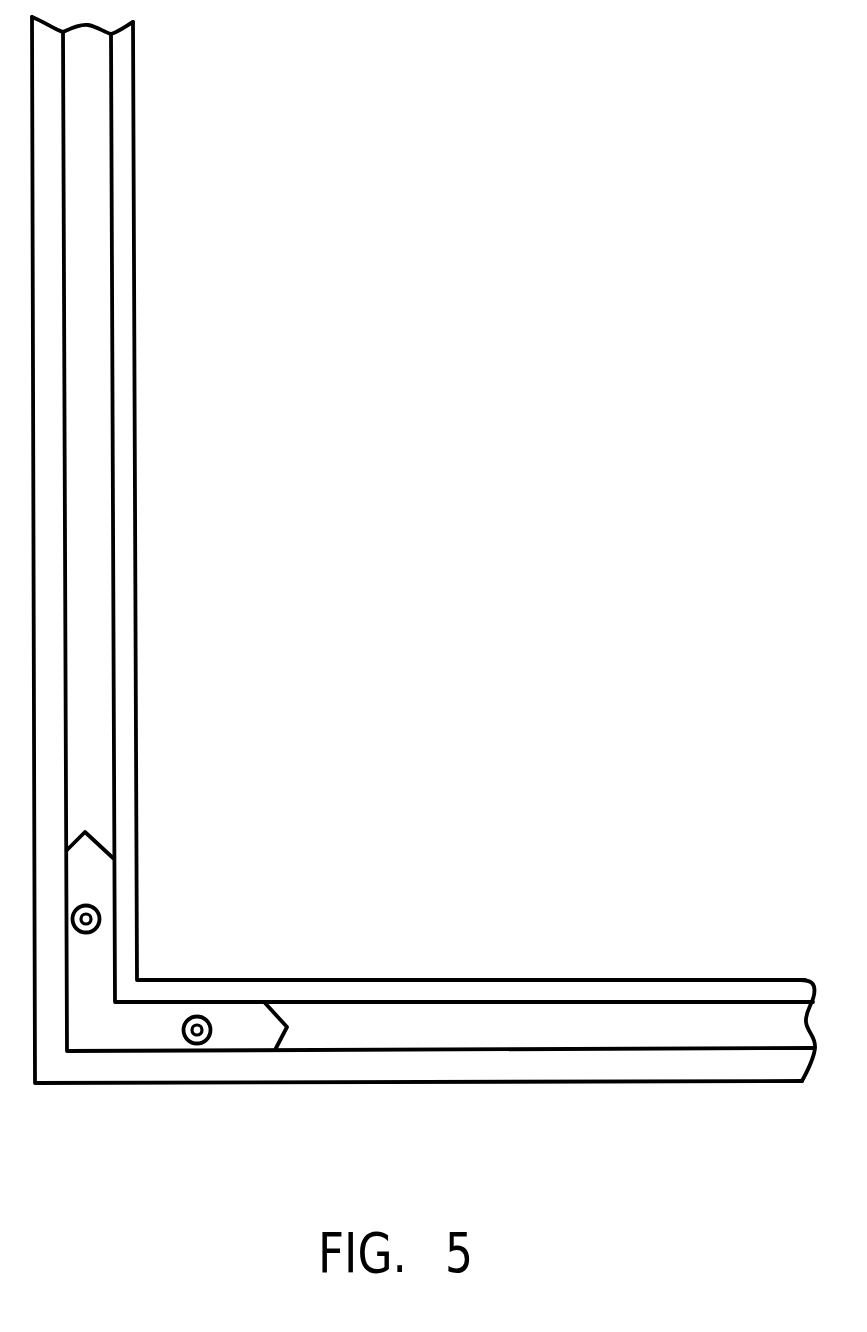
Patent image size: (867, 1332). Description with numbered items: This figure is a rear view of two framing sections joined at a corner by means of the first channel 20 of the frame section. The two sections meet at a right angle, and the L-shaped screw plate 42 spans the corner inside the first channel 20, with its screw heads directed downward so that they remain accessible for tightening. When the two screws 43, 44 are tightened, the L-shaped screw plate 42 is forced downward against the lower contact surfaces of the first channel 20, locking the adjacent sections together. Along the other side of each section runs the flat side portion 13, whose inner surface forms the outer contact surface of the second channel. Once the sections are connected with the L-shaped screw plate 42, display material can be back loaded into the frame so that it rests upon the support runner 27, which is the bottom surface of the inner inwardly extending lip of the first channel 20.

The flat side portion 13 is at (600, 1081).
The first channel 20 is at (650, 1027).
The support runner 27 is at (452, 992).
The L-shaped screw plate 42 is at (130, 1028).
The screw 43 is at (100, 910).
The screw 44 is at (194, 1044).